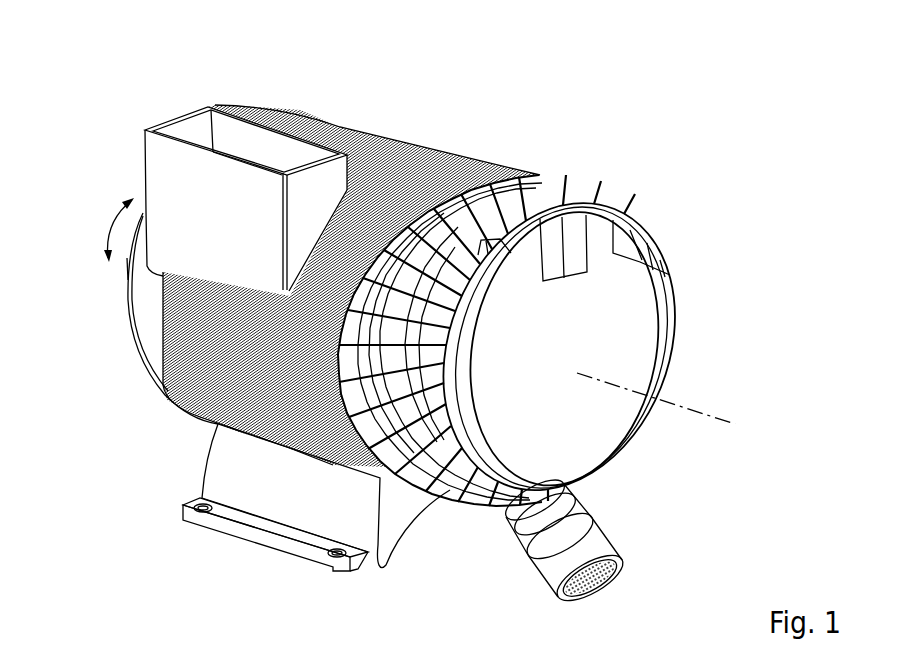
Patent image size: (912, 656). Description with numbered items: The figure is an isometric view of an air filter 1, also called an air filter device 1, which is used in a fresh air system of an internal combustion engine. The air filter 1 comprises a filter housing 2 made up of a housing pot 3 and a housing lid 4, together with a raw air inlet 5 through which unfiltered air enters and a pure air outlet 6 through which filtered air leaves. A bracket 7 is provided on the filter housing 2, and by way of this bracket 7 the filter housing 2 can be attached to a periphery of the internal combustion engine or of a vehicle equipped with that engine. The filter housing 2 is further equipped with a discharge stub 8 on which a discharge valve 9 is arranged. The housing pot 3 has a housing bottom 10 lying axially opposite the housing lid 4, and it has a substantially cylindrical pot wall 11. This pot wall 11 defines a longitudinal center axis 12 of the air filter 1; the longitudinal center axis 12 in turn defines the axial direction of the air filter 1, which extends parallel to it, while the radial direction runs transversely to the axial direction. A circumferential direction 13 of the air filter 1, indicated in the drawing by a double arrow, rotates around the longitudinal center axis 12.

The air filter device 1 is at (648, 152).
The filter housing 2 is at (455, 149).
The housing pot 3 is at (380, 137).
The housing lid 4 is at (607, 428).
The raw air inlet 5 is at (158, 150).
The pure air outlet 6 is at (125, 268).
The bracket 7 is at (224, 460).
The discharge stub 8 is at (504, 514).
The discharge valve 9 is at (557, 567).
The housing bottom 10 is at (128, 303).
The pot wall 11 is at (147, 343).
The longitudinal center axis 12 is at (720, 412).
The circumferential direction 13 is at (110, 227).